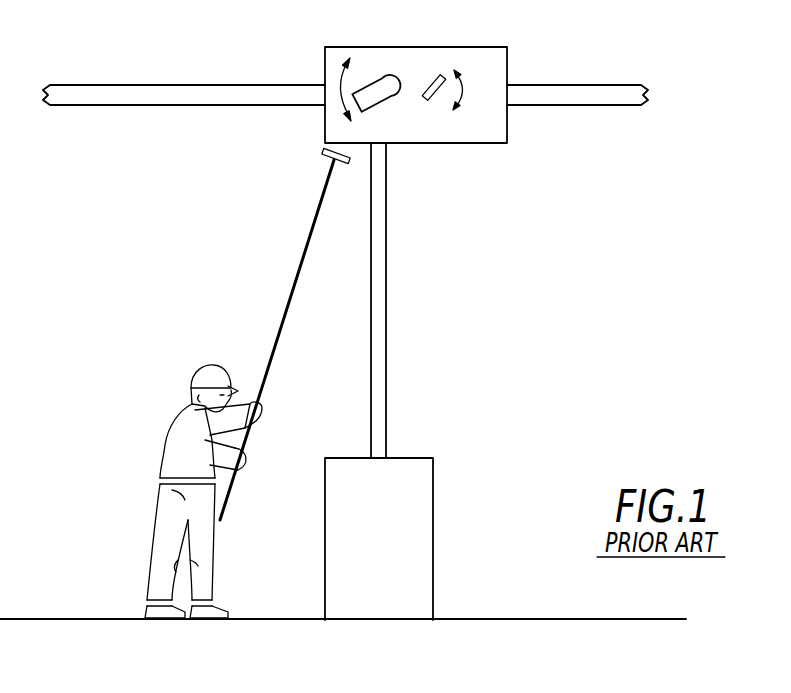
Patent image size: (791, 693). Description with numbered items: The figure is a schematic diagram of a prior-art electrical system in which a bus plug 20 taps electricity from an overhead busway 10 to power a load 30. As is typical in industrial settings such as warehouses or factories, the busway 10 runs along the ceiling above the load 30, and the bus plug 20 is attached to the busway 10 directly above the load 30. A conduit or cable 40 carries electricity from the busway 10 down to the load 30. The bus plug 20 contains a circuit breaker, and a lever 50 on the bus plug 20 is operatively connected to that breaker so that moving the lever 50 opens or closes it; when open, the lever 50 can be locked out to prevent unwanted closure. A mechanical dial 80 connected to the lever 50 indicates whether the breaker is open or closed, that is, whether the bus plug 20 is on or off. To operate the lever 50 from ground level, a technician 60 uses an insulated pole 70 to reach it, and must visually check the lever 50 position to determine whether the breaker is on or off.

The busway 10 is at (160, 85).
The bus plug 20 is at (508, 55).
The load 30 is at (433, 475).
The conduit or cable 40 is at (386, 252).
The lever 50 is at (397, 114).
The technician 60 is at (186, 355).
The insulated pole 70 is at (300, 222).
The mechanical dial 80 is at (426, 74).